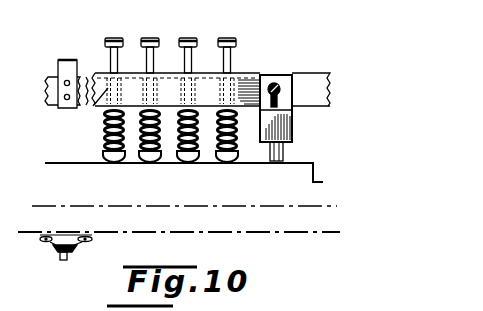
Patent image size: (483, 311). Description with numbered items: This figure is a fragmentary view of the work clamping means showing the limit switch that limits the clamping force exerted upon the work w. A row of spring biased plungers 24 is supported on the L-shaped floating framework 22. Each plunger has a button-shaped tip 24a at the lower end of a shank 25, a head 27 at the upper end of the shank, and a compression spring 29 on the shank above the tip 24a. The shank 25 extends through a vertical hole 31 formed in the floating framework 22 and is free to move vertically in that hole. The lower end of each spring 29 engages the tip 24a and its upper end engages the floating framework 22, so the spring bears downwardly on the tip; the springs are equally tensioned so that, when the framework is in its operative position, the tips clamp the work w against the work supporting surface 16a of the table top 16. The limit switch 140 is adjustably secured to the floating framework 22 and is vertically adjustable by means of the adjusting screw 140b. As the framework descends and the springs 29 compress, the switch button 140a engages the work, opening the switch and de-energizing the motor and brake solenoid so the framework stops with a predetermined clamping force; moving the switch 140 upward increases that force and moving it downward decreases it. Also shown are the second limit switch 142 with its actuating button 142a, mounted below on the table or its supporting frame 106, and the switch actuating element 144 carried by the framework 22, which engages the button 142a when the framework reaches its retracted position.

The table top 16 is at (302, 233).
The work supporting surface 16a is at (277, 203).
The floating framework 22 is at (315, 77).
The spring biased plungers 24 is at (109, 62).
The button-shaped tip 24a is at (128, 160).
The shank 25 is at (94, 108).
The head 27 is at (233, 38).
The compression spring 29 is at (197, 162).
The vertical hole 31 is at (240, 84).
The frame member 106 is at (0, 289).
The limit switch 140 is at (305, 91).
The switch button 140a is at (287, 158).
The adjusting screw 140b is at (291, 77).
The second limit switch 142 is at (89, 264).
The actuating button 142a is at (63, 259).
The switch actuating element 144 is at (58, 63).
The workpiece w is at (192, 177).